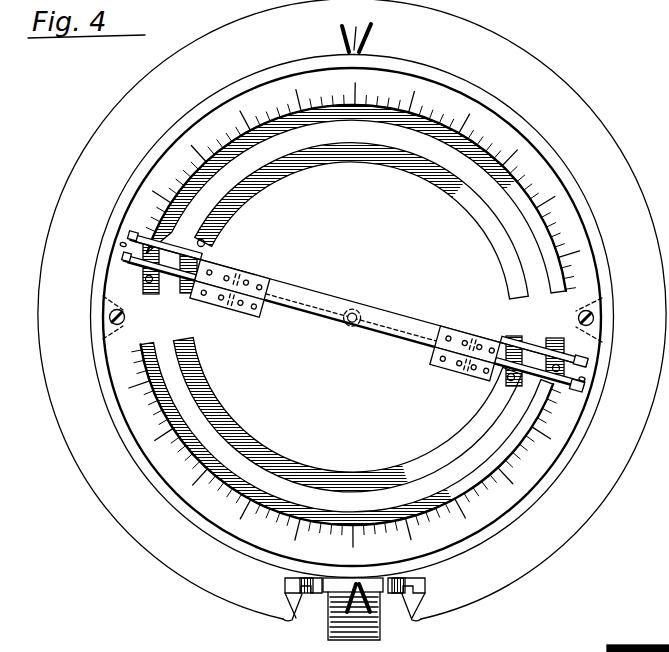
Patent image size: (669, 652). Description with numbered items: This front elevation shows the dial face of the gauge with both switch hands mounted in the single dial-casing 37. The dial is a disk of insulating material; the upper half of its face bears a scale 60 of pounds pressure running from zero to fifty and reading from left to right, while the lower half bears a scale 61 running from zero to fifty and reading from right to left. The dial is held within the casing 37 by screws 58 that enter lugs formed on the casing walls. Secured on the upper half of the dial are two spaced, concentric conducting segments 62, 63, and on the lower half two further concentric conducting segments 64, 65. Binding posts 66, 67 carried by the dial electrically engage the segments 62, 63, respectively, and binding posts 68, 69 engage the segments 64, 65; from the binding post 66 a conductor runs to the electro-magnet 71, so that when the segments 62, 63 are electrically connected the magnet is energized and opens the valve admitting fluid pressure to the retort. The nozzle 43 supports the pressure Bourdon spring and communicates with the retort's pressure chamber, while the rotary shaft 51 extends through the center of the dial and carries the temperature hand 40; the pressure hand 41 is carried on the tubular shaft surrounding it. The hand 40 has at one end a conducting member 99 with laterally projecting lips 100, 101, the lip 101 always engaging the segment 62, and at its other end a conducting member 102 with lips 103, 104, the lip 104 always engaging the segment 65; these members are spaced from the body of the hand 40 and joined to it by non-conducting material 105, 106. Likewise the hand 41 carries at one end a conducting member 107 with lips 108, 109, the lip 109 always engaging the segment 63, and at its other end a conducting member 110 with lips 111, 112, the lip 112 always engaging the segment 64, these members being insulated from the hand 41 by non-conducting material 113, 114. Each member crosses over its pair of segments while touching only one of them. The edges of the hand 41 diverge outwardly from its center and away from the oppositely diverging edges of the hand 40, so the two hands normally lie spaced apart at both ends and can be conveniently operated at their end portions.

The dial-casing 37 is at (352, 310).
The hand and switch 40 is at (290, 308).
The hand and switch 41 is at (290, 292).
The nozzle 43 is at (365, 614).
The rotary shaft 51 is at (351, 324).
The screws 58 is at (125, 318).
The scale of pounds pressure 60 is at (495, 125).
The scale of pounds pressure 61 is at (485, 509).
The conducting segment 62 is at (502, 185).
The conducting segment 63 is at (500, 238).
The conducting segment 64 is at (508, 454).
The conducting segment 65 is at (442, 453).
The binding post 66 is at (352, 112).
The binding post 67 is at (357, 155).
The binding post 68 is at (357, 520).
The binding post 69 is at (355, 481).
The electro-magnet 71 is at (251, 626).
The conducting member 99 is at (163, 290).
The lip 100 is at (124, 257).
The lip 101 is at (144, 278).
The conducting member 102 is at (535, 381).
The lip 103 is at (582, 388).
The lip 104 is at (503, 379).
The non-conducting material 105 is at (252, 302).
The non-conducting material 106 is at (448, 360).
The conducting member 107 is at (205, 231).
The lip 108 is at (129, 236).
The lip 109 is at (207, 245).
The conducting member 110 is at (538, 337).
The lip 111 is at (588, 361).
The lip 112 is at (592, 379).
The non-conducting material 113 is at (262, 283).
The non-conducting material 114 is at (455, 328).